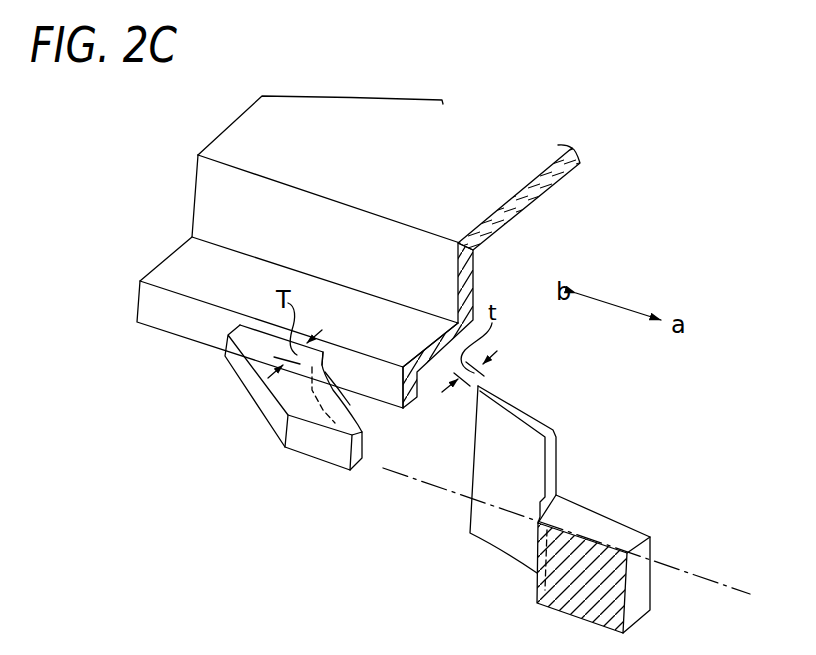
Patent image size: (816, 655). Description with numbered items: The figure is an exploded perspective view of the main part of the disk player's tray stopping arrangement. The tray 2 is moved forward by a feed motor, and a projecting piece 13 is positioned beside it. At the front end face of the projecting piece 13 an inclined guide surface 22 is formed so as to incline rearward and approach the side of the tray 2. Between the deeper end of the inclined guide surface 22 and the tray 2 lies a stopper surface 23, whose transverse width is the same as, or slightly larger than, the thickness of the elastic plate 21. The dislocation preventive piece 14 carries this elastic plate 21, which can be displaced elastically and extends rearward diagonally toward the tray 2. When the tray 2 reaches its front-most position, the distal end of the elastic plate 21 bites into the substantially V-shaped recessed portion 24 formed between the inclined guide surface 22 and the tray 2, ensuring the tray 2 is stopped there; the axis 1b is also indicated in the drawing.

The tray 2 is at (212, 207).
The projecting piece 13 is at (258, 419).
The dislocation preventive piece 14 is at (607, 508).
The elastic plate 21 is at (513, 407).
The inclined guide surface 22 is at (347, 405).
The stopper surface 23 is at (324, 369).
The recessed portion 24 is at (368, 413).
The axis (1) 1b is at (718, 585).